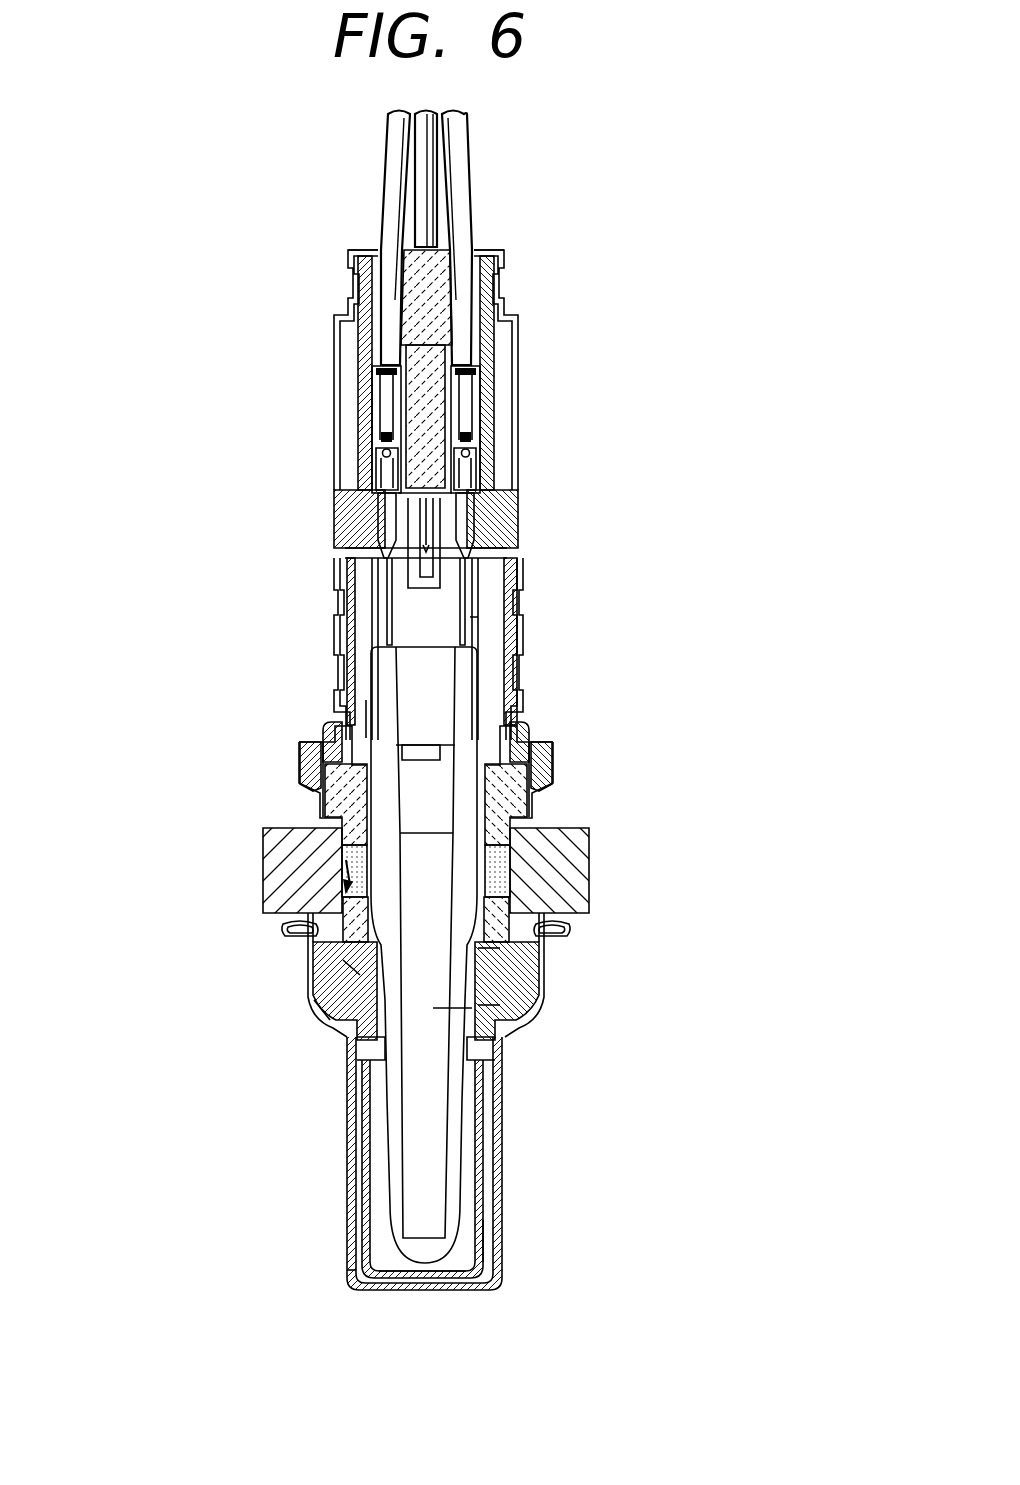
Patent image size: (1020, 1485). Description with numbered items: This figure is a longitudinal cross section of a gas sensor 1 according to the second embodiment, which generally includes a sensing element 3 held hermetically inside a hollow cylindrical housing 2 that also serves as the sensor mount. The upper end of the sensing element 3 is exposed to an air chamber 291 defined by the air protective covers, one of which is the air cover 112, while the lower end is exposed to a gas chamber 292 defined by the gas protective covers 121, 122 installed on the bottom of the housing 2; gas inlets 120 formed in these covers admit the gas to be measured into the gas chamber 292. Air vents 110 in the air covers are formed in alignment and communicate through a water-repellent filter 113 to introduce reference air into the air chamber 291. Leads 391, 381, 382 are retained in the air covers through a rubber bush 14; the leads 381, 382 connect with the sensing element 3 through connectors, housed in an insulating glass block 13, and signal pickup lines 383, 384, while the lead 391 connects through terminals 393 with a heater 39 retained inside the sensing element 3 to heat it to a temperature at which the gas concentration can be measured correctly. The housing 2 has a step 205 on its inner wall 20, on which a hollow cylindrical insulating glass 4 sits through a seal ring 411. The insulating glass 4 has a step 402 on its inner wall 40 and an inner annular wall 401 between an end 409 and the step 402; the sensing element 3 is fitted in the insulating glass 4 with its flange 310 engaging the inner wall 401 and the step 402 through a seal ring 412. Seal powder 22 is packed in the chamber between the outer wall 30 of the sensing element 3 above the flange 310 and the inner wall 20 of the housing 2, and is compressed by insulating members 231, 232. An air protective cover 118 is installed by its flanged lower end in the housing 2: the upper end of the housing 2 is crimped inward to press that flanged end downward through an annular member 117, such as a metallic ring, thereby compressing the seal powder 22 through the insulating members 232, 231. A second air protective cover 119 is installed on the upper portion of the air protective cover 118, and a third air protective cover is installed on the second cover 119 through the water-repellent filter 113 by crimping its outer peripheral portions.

The gas sensor 1 is at (178, 555).
The housing 2 is at (578, 862).
The sensing element 3 is at (450, 1190).
The insulating glass 4 is at (522, 960).
The insulating glass block 13 is at (448, 342).
The rubber bush 14 is at (427, 268).
The inner wall 20 is at (462, 880).
The seal powder 22 is at (345, 845).
The outer wall 30 is at (465, 1110).
The heater 39 is at (434, 1008).
The inner wall 40 is at (358, 970).
The air vents 110 is at (482, 398).
The air cover 112 is at (495, 500).
The water-repellent filter 113 is at (336, 432).
The annular member 117 is at (522, 758).
The air protective cover 118 is at (518, 680).
The second air protective cover 119 is at (522, 602).
The gas inlets 120 is at (476, 1160).
The gas protective cover 121 is at (490, 1232).
The gas protective cover 122 is at (347, 1275).
The step 205 is at (316, 1020).
The insulating member 231 is at (345, 840).
The insulating member 232 is at (327, 772).
The air chamber 291 is at (370, 705).
The gas chamber 292 is at (446, 1285).
The flange 310 is at (480, 822).
The lead 381 is at (391, 185).
The lead 382 is at (460, 162).
The signal pickup line 383 is at (388, 607).
The signal pickup line 384 is at (466, 600).
The lead 391 is at (418, 132).
The terminals 393 is at (422, 618).
The inner annular wall 401 is at (348, 893).
The step 402 is at (345, 940).
The end 409 is at (345, 850).
The seal ring 411 is at (494, 1005).
The seal ring 412 is at (494, 940).